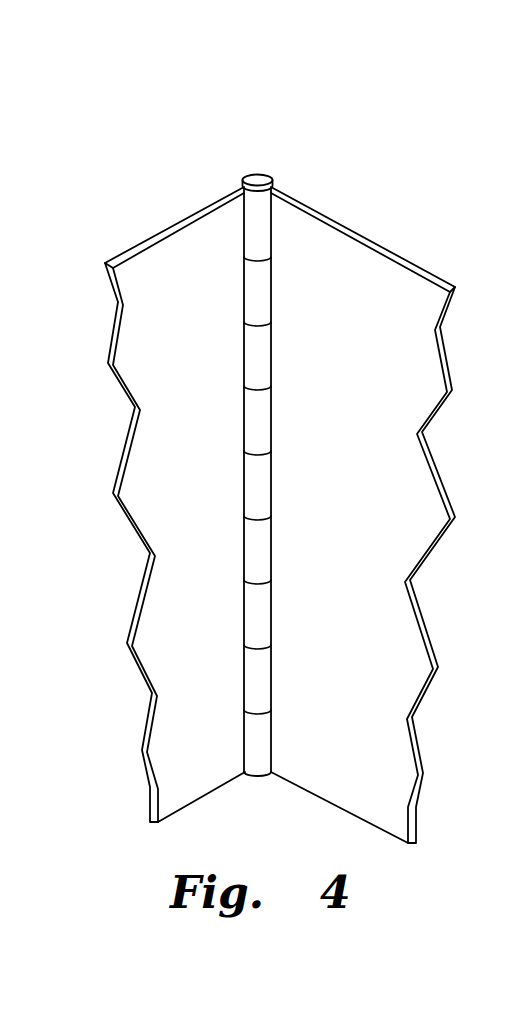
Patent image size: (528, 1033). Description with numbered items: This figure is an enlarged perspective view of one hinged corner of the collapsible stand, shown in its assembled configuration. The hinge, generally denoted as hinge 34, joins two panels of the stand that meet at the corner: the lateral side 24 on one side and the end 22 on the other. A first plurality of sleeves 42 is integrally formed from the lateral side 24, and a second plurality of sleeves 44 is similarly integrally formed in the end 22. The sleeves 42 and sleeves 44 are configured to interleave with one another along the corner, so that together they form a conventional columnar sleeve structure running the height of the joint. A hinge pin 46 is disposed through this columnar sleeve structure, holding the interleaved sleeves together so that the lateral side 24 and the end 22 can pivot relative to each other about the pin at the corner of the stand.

The end 22 is at (326, 236).
The lateral side 24 is at (162, 262).
The hinge 34 is at (206, 154).
The first plurality of sleeves 42 is at (268, 224).
The second plurality of sleeves 44 is at (263, 288).
The hinge pin 46 is at (253, 177).